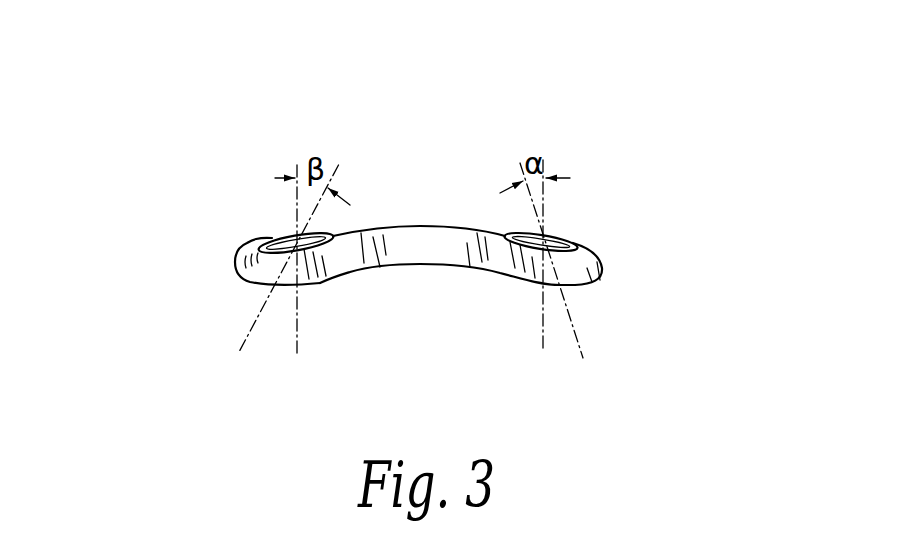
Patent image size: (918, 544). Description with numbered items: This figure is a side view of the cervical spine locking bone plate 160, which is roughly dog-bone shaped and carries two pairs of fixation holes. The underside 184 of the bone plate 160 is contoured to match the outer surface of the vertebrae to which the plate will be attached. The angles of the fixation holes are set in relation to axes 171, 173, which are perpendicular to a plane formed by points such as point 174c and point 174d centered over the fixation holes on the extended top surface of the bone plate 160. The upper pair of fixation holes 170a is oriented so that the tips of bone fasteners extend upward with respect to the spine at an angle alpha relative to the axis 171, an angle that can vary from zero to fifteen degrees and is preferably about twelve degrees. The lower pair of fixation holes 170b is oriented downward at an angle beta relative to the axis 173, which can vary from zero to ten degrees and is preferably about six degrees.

The bone plate 160 is at (251, 217).
The axis 171 is at (299, 168).
The axis 173 is at (544, 168).
The upper fixation holes 170a is at (317, 231).
The lower fixation holes 170b is at (523, 232).
The point 174c is at (290, 236).
The point 174d is at (551, 233).
The underside 184 is at (410, 271).